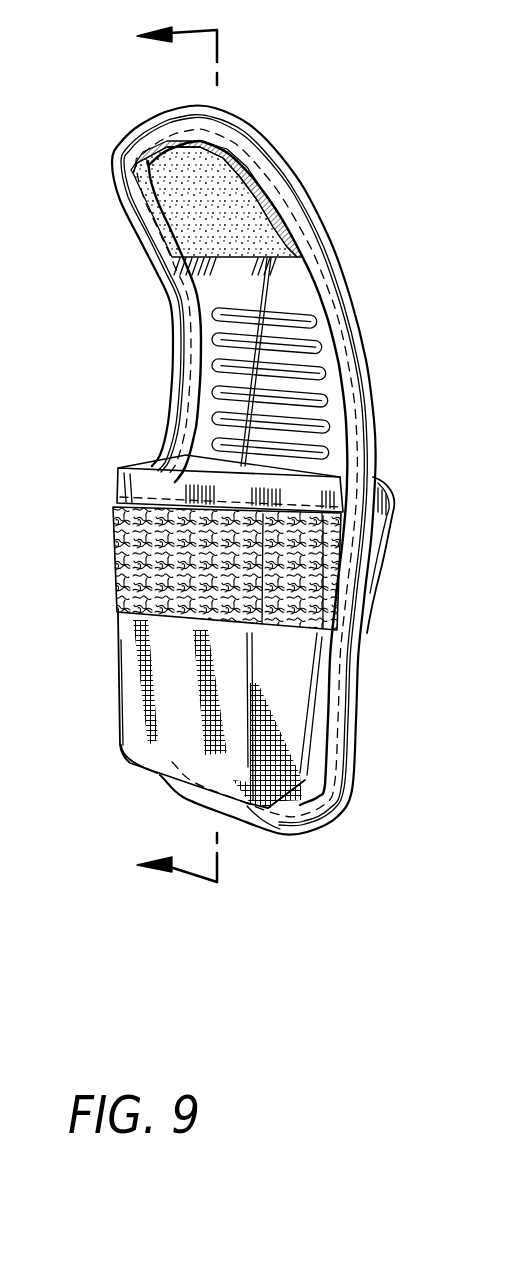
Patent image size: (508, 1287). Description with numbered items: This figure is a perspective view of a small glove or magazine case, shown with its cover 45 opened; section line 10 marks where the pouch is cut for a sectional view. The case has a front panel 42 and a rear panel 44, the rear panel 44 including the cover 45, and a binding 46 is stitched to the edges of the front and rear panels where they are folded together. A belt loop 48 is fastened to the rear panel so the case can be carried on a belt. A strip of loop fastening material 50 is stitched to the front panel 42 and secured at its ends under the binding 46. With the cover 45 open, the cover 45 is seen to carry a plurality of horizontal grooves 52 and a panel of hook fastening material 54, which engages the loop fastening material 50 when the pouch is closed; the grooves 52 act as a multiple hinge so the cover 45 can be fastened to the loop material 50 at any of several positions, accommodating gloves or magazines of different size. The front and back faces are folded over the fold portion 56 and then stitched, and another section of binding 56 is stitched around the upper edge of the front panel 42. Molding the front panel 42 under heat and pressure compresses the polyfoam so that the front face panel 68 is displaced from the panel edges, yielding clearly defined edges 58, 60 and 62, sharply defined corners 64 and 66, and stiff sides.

The section line 10- 10 is at (177, 460).
The front panel 42 is at (143, 718).
The rear panel 44 is at (360, 677).
The cover 45 is at (203, 293).
The binding 46 is at (303, 833).
The belt loop 48 is at (397, 517).
The loop fastening material 50 is at (118, 545).
The horizontal grooves 52 is at (150, 310).
The panel of hook fastening material 54 is at (240, 206).
The fold portion 56 is at (152, 462).
The edge 58 is at (120, 678).
The edge 60 is at (247, 677).
The edge 62 is at (165, 773).
The corner 64 is at (123, 757).
The corner 66 is at (247, 806).
The front face panel 68 is at (157, 637).